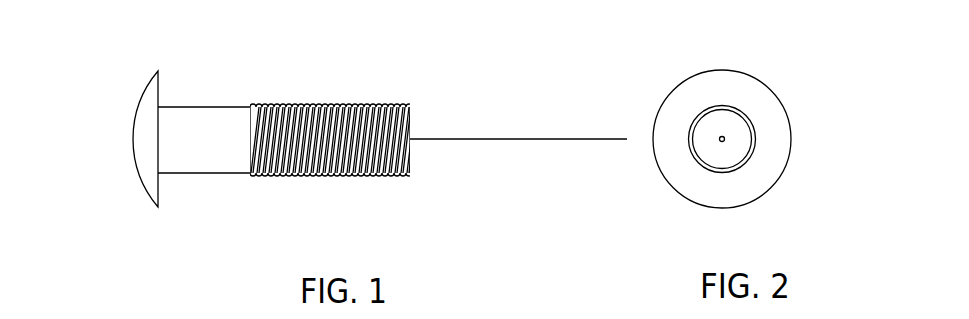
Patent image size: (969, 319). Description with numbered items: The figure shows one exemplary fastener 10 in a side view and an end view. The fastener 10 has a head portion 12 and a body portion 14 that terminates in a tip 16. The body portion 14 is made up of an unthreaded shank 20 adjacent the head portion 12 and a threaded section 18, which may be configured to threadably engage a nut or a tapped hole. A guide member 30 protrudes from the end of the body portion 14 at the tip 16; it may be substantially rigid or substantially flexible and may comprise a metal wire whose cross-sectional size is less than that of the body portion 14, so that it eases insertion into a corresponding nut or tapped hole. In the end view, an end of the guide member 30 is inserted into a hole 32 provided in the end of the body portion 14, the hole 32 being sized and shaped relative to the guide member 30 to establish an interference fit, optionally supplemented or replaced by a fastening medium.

In FIG. 1, the fastener 10 is at (345, 136).
In FIG. 2, the fastener 10 is at (745, 118).
In FIG. 1, the head portion 12 is at (121, 167).
In FIG. 2, the head portion 12 is at (770, 175).
In FIG. 1, the body portion 14 is at (333, 147).
In FIG. 2, the body portion 14 is at (716, 104).
In FIG. 1, the tip 16 is at (419, 165).
In FIG. 1, the threaded section 18 is at (361, 106).
In FIG. 1, the unthreaded shank 20 is at (206, 106).
In FIG. 1, the guide member 30 is at (546, 151).
In FIG. 2, the guide member 30 is at (735, 136).
In FIG. 2, the hole 32 is at (726, 136).